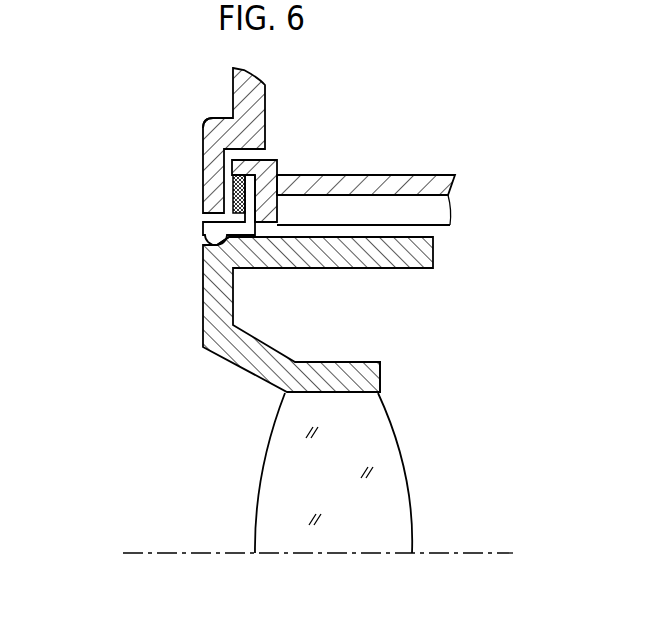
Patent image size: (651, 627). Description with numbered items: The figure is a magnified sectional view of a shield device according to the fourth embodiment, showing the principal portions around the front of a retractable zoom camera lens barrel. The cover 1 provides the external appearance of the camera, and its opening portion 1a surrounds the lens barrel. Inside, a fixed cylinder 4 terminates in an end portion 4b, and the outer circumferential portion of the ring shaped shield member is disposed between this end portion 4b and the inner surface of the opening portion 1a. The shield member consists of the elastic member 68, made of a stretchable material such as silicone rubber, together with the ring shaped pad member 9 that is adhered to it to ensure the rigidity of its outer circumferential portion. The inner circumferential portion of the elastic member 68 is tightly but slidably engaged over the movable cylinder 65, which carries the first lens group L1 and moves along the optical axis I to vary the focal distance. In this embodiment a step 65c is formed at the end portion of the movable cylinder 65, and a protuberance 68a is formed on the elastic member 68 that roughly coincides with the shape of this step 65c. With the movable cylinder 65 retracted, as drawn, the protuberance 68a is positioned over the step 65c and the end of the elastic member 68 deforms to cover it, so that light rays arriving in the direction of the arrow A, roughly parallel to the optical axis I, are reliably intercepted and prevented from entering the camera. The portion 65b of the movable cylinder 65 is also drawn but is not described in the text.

The cover 1 is at (243, 93).
The ring shaped pad member 9 is at (209, 176).
The opening portion 1a is at (190, 221).
The fixed cylinder 4 is at (408, 180).
The end portion 4b is at (268, 157).
The elastic member 68 is at (235, 206).
The protuberance 68a is at (207, 238).
The arrow A is at (190, 232).
The movable cylinder 65 is at (243, 347).
The flange portion 65b is at (352, 368).
The step 65c is at (215, 260).
The first lens group L1 is at (282, 505).
The optical axis I is at (225, 553).